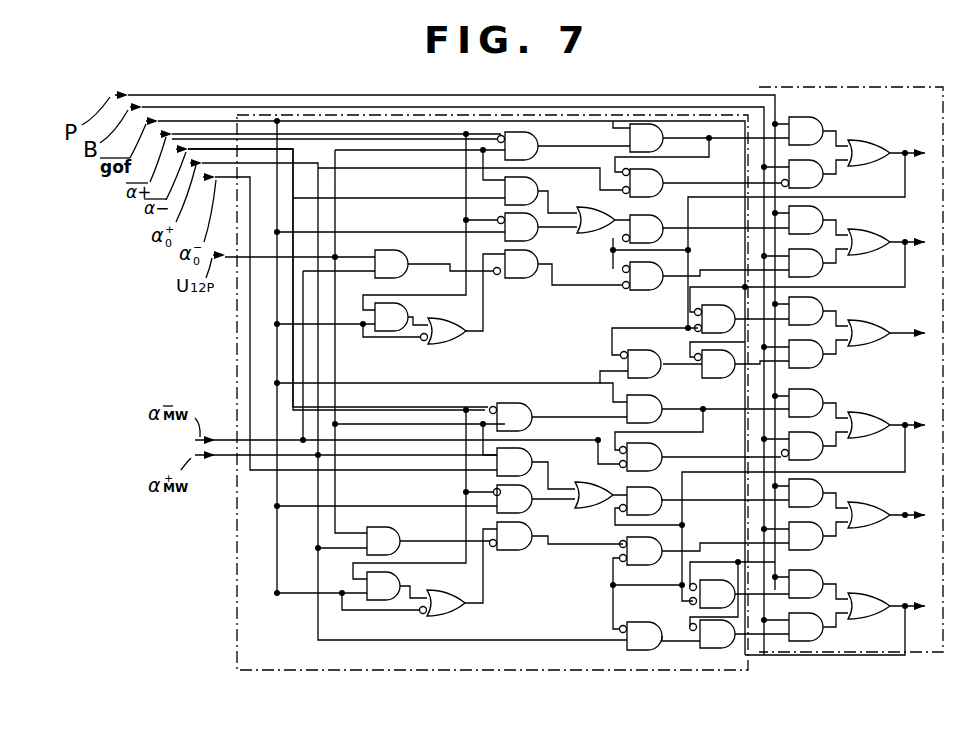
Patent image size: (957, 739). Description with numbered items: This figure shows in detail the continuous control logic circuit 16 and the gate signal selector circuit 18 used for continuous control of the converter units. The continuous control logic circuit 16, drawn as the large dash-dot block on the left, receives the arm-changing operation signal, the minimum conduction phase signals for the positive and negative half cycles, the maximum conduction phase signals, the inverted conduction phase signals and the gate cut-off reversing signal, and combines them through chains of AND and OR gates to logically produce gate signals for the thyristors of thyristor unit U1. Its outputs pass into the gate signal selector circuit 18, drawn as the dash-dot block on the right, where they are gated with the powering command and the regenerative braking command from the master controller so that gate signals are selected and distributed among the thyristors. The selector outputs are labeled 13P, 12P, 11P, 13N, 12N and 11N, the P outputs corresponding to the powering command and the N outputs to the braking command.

The continuous control logic circuit 16 is at (624, 672).
The gate signal selector circuit 18 is at (868, 90).
The output signal 13P is at (846, 152).
The output signal 12P is at (846, 241).
The output signal 11P is at (846, 332).
The output signal 13N is at (847, 424).
The output signal 12N is at (847, 514).
The output signal 11N is at (847, 605).